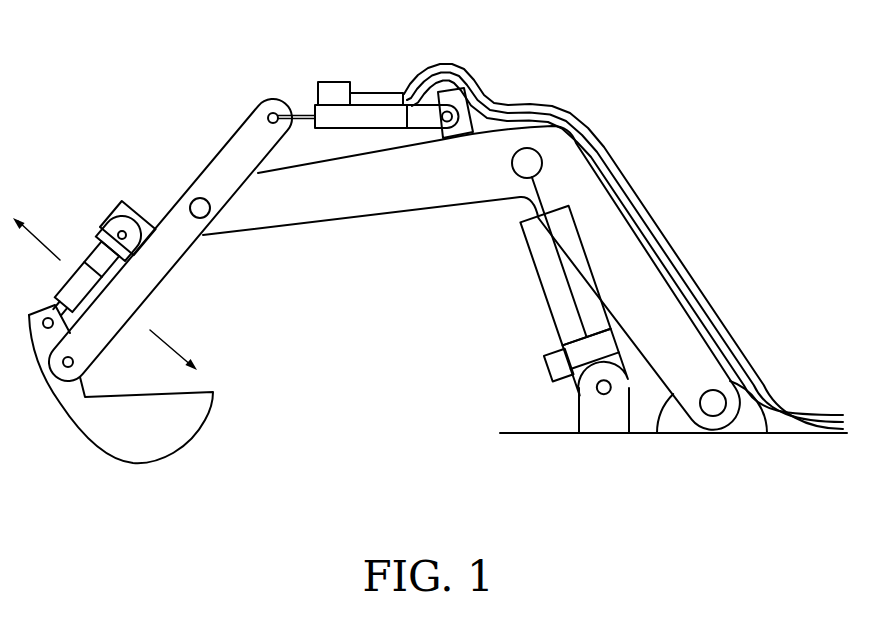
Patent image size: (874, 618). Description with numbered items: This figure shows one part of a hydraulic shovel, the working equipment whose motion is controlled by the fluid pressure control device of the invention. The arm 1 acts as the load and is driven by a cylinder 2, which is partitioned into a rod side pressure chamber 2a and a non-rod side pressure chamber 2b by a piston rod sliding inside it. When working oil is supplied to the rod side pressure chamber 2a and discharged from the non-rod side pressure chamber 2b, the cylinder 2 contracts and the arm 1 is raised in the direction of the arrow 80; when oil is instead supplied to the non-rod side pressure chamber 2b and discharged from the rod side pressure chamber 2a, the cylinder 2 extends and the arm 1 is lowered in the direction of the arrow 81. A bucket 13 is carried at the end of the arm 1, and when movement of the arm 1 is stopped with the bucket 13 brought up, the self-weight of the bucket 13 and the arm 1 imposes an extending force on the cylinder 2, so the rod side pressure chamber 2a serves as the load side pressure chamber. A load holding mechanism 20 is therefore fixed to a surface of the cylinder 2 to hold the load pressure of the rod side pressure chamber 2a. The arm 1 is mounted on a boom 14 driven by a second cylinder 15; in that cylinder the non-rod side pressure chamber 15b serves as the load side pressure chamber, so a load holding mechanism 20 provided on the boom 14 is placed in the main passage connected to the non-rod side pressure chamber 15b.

The arm 1 is at (223, 148).
The cylinder 2 is at (362, 161).
The rod side pressure chamber 2a is at (343, 128).
The non-rod side pressure chamber 2b is at (425, 128).
The bucket 13 is at (198, 437).
The boom 14 is at (677, 333).
The cylinder 15 is at (541, 290).
The non-rod side pressure chamber 15b is at (590, 352).
The load holding mechanism 20 is at (330, 82).
The arrow 80 is at (43, 243).
The arrow 81 is at (167, 343).